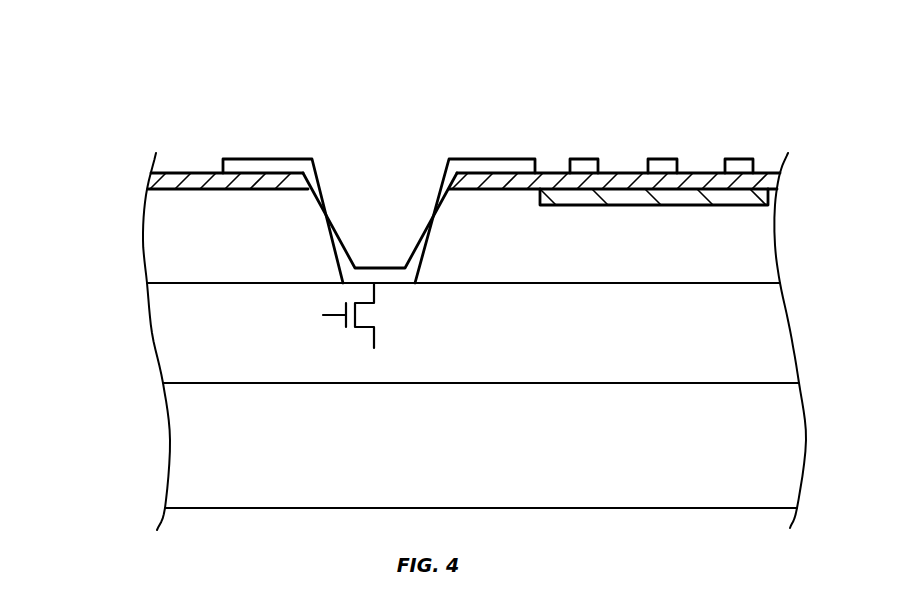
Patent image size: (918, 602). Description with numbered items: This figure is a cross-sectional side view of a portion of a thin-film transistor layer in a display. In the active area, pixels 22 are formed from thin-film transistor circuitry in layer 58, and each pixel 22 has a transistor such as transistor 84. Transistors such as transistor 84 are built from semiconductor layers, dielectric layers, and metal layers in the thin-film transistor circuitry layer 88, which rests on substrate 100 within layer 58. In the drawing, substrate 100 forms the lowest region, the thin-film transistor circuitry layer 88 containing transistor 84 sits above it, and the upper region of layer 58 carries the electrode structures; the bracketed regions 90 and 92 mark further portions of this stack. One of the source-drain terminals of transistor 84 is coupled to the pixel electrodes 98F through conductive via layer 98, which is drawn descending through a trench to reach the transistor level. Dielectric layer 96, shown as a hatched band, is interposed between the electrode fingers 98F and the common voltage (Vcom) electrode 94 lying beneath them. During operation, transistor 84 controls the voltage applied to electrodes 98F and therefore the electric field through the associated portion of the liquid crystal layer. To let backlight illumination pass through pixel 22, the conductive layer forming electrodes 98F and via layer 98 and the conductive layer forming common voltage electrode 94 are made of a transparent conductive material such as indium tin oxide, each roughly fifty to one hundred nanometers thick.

The pixel 22 is at (323, 73).
The thin-film transistor layer 58 is at (78, 157).
The transistor 84 is at (314, 318).
The thin-film transistor circuitry layer 88 is at (828, 284).
The upper display layers 90 is at (828, 173).
The dielectric planarization layer 92 is at (155, 237).
The common voltage electrode 94 is at (630, 197).
The dielectric layer 96 is at (193, 173).
The conductive via layer 98 is at (490, 163).
The pixel electrode fingers 98F is at (588, 163).
The substrate 100 is at (795, 440).